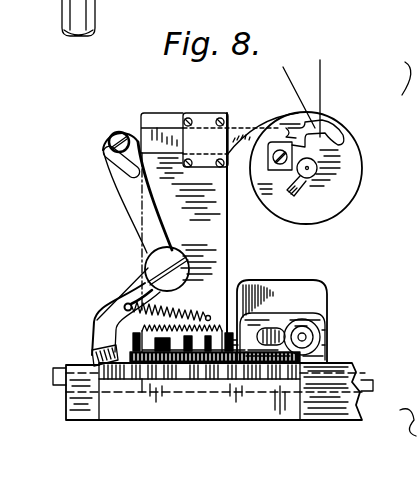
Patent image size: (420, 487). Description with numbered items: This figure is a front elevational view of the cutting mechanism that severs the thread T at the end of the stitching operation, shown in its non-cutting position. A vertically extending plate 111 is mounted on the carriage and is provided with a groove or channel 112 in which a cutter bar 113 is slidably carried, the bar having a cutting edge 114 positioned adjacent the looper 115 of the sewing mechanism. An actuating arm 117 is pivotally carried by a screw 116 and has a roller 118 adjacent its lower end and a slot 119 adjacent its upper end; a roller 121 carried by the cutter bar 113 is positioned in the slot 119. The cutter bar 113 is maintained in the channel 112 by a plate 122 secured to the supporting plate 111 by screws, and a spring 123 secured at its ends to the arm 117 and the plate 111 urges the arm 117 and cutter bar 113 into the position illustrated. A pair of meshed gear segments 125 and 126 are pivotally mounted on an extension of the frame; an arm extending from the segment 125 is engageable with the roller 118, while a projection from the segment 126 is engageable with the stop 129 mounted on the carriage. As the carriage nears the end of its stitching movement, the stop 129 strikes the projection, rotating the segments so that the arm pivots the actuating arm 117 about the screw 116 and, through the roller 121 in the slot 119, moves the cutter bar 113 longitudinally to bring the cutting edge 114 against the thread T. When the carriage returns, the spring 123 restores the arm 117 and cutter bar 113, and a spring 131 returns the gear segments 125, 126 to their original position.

The vertically extending plate 111 is at (215, 250).
The groove or channel 112 is at (165, 128).
The cutter bar 113 is at (155, 135).
The cutting edge 114 is at (304, 118).
The looper 115 is at (340, 137).
The screw 116 is at (152, 262).
The actuating arm 117 is at (133, 210).
The roller 118 is at (95, 353).
The slot 119 is at (118, 168).
The roller 121 is at (100, 138).
The plate 122 is at (212, 140).
The spring 123 is at (178, 307).
The gear segment 125 is at (148, 380).
The gear segment 126 is at (240, 362).
The stop 129 is at (320, 300).
The spring 131 is at (185, 363).
The thread T is at (320, 92).